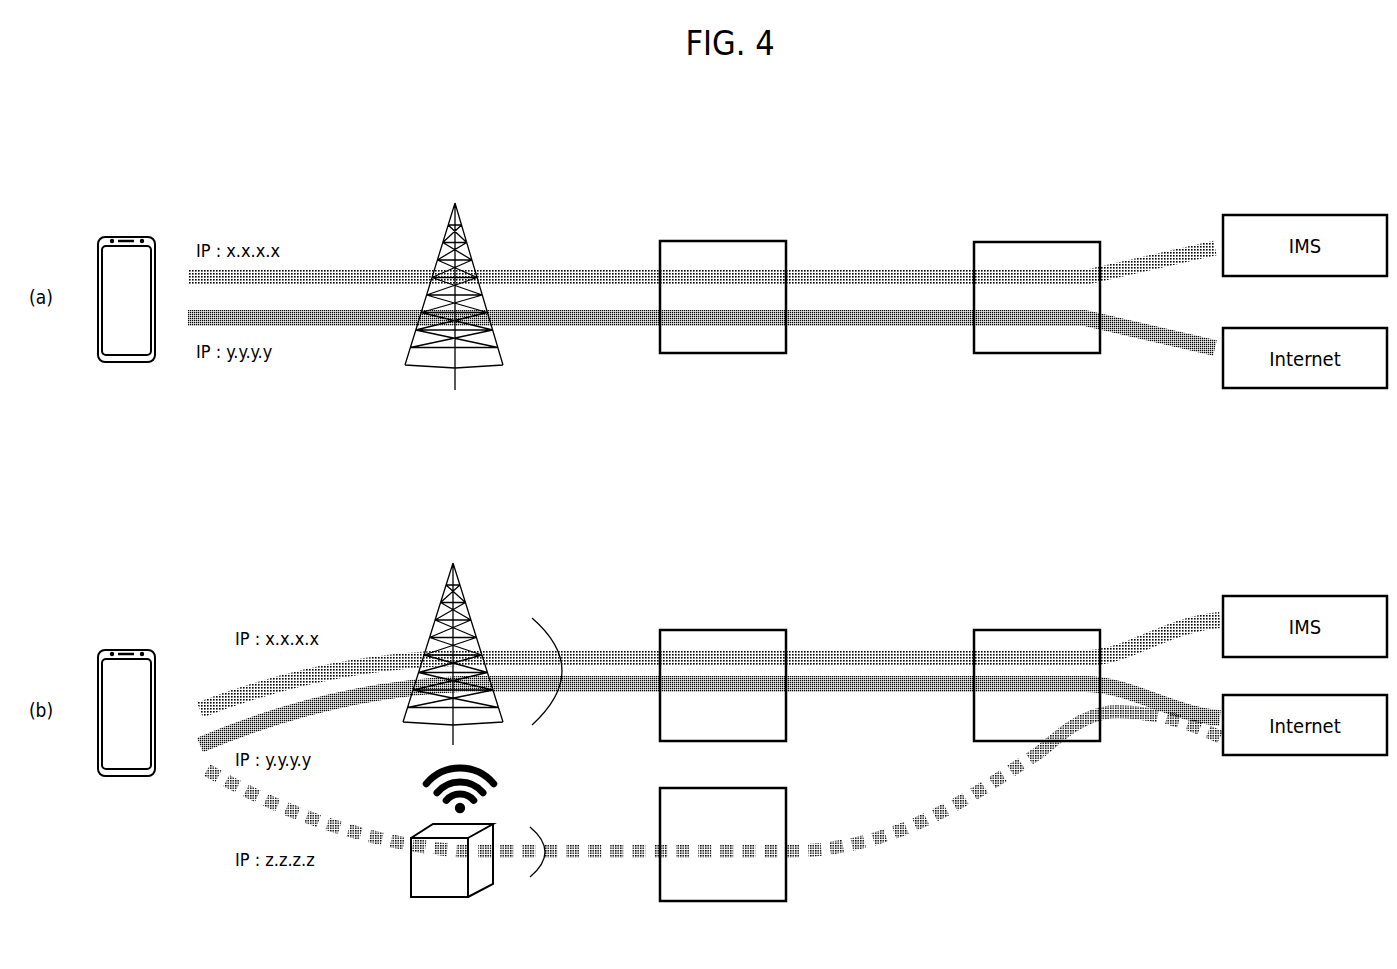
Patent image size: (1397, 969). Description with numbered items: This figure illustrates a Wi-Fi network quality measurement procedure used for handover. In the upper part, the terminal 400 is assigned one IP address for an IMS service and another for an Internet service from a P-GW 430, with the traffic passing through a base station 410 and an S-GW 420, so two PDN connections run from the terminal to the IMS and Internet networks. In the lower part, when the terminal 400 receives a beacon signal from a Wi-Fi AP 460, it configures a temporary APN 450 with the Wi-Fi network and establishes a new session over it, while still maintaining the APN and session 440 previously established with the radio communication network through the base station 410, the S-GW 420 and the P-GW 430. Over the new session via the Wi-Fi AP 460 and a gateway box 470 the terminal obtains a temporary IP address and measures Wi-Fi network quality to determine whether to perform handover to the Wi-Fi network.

The terminal 400 is at (126, 236).
The base station 410 is at (474, 253).
The S-GW 420 is at (722, 241).
The P-GW 430 is at (1035, 242).
The APN and session 440 is at (553, 623).
The temporary APN 450 is at (540, 832).
The Wi-Fi AP 460 is at (438, 900).
The evolved packet data gateway 470 is at (787, 794).